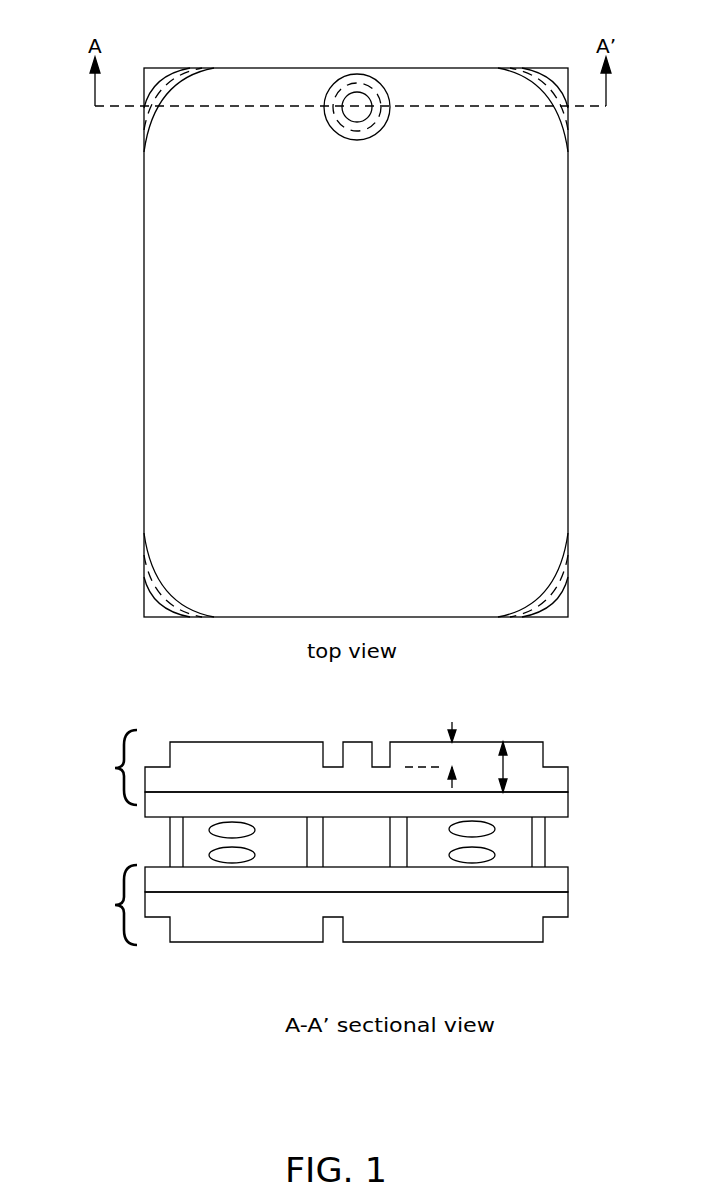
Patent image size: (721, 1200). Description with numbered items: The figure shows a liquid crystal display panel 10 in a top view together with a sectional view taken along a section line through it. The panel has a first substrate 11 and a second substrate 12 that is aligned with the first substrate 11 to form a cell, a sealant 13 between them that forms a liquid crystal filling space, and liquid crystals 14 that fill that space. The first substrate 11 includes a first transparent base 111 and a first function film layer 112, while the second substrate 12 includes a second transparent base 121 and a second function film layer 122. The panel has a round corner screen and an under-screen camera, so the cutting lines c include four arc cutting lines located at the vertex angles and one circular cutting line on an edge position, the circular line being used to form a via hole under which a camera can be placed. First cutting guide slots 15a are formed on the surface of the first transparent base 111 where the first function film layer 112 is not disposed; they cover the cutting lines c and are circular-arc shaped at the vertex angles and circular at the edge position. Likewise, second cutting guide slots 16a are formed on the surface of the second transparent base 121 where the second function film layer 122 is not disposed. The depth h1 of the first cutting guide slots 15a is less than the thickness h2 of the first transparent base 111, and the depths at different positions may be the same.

The liquid crystal display panel 10 is at (62, 63).
The first substrate 11 is at (114, 767).
The first transparent base 111 is at (530, 383).
The first function film layer 112 is at (558, 810).
The second substrate 12 is at (114, 905).
The second transparent base 121 is at (562, 912).
The second function film layer 122 is at (555, 888).
The sealant 13 is at (538, 852).
The liquid crystals 14 is at (232, 828).
The first cutting guide slots 15a is at (148, 135).
The second cutting guide slots 16a is at (162, 932).
The cutting line c is at (182, 76).
The depth of first cutting guide slots h1 is at (434, 755).
The thickness of first transparent base h2 is at (515, 767).